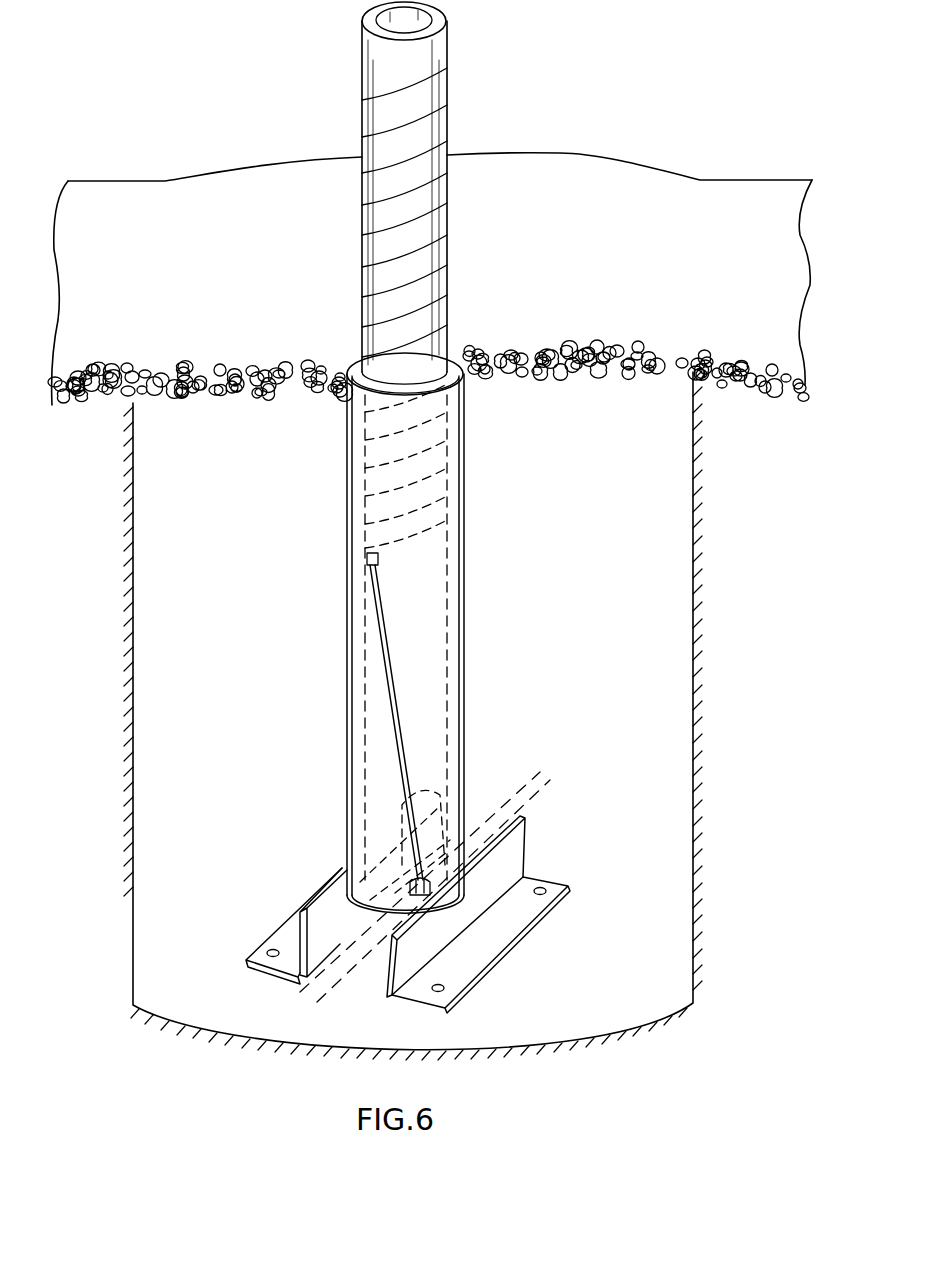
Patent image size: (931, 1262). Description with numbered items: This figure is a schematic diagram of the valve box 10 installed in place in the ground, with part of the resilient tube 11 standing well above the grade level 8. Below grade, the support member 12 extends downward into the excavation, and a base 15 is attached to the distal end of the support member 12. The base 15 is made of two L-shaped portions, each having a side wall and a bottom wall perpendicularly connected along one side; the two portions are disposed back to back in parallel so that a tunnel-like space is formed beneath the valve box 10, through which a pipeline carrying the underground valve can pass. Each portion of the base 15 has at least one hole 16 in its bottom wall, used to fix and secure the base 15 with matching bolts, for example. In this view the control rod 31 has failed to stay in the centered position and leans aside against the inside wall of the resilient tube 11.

The grade level 8 is at (613, 190).
The valve box 10 is at (318, 499).
The resilient tube 11 is at (362, 73).
The support member 12 is at (465, 622).
The base 15 is at (483, 947).
The hole 16 is at (565, 885).
The control rod 31 is at (385, 688).